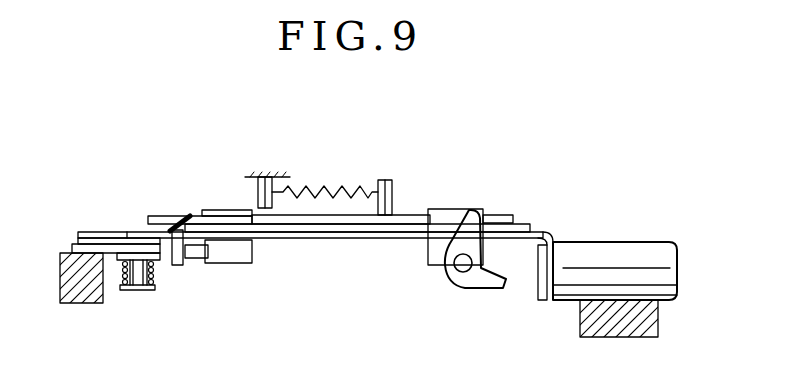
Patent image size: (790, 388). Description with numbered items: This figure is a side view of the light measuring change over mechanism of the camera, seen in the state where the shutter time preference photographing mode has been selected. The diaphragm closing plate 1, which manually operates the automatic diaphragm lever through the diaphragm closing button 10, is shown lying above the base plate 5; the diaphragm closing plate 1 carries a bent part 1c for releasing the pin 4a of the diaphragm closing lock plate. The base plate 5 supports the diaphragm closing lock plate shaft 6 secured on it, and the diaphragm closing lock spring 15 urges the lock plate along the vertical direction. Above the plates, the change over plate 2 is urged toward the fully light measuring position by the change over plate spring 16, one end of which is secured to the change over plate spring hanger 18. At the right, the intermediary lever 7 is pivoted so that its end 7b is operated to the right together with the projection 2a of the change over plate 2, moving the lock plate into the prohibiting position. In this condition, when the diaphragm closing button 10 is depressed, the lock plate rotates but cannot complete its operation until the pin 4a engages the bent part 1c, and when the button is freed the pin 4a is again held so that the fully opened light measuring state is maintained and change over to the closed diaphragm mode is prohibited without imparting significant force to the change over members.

The diaphragm closing plate 1 is at (413, 238).
The bent part 1c is at (191, 217).
The change over plate 2 is at (402, 215).
The projection 2a is at (491, 216).
The pin 4a is at (195, 258).
The base plate 5 is at (77, 244).
The diaphragm closing lock plate shaft 6 is at (133, 290).
The intermediary lever 7 is at (483, 282).
The end of the intermediary lever 7b is at (472, 210).
The diaphragm closing button 10 is at (652, 250).
The diaphragm closing lock spring 15 is at (155, 283).
The change over plate spring 16 is at (322, 185).
The change over plate spring hanger 18 is at (265, 176).